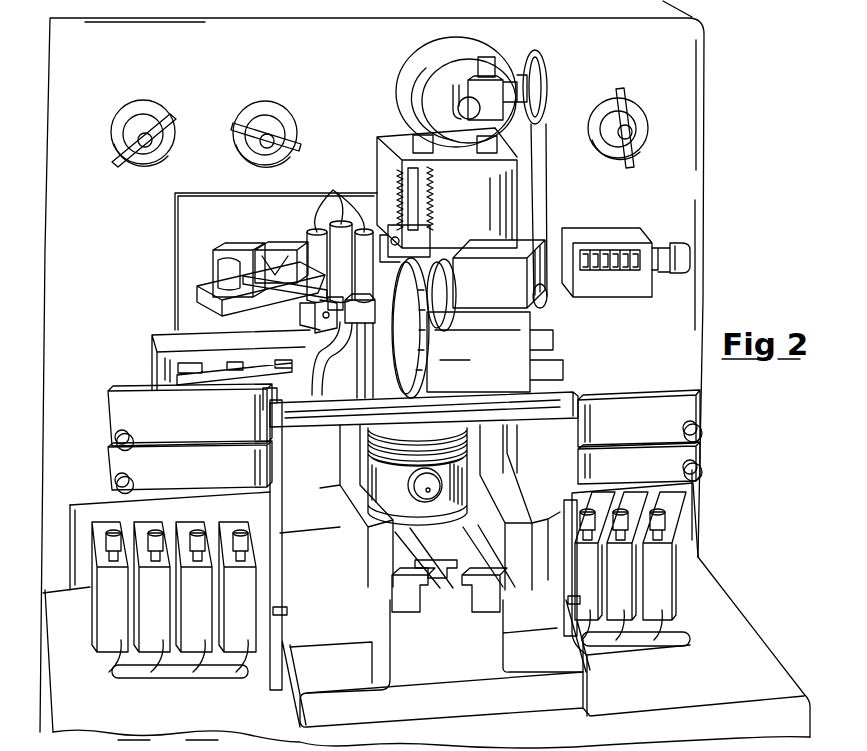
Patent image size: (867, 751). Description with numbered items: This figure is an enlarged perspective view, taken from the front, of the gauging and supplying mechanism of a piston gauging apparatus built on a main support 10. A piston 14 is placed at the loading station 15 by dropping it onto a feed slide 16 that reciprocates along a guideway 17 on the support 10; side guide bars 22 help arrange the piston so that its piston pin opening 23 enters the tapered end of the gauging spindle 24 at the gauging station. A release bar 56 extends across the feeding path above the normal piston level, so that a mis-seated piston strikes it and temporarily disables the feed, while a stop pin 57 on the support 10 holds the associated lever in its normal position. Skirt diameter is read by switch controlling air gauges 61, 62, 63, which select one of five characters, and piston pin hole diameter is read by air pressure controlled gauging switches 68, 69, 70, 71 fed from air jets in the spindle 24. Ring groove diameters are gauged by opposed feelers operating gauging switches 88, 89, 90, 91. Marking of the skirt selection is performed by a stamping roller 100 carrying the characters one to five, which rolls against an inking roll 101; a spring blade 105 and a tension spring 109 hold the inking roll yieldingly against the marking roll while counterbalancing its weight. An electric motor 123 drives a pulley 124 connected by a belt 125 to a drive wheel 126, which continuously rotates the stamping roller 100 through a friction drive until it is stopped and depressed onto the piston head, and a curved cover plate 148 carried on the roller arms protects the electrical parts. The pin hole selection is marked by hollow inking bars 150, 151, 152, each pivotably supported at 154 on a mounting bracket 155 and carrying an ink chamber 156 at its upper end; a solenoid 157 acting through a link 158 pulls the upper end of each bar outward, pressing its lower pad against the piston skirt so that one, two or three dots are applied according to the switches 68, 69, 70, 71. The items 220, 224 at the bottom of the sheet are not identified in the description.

The main support 10 is at (742, 620).
The piston 14 is at (458, 487).
The loading station 15 is at (463, 605).
The feed slide 16 is at (438, 579).
The guideway 17 is at (410, 613).
The side guide bars 22 is at (362, 498).
The piston pin opening 23 is at (410, 487).
The gauging spindle 24 is at (428, 494).
The release bar 56 is at (578, 398).
The stop pin 57 is at (284, 610).
The switch controlling air gauge 61 is at (595, 566).
The switch controlling air gauge 62 is at (627, 566).
The switch controlling air gauge 63 is at (664, 566).
The air pressure controlled gauging switch 68 is at (110, 597).
The air pressure controlled gauging switch 69 is at (152, 597).
The air pressure controlled gauging switch 70 is at (194, 597).
The air pressure controlled gauging switch 71 is at (237, 597).
The gauging switch 88 is at (122, 410).
The gauging switch 89 is at (118, 470).
The gauging switch 90 is at (660, 398).
The gauging switch 91 is at (703, 450).
The stamping roller 100 is at (425, 352).
The inking roll 101 is at (428, 248).
The spring blade 105 is at (428, 198).
The tension spring 109 is at (430, 186).
The electric motor 123 is at (425, 76).
The pulley 124 is at (527, 62).
The belt 125 is at (548, 182).
The drive wheel 126 is at (547, 305).
The curved cover plate 148 is at (520, 342).
The inking bar 150 is at (345, 375).
The inking bar 151 is at (361, 342).
The inking bar 152 is at (370, 372).
The pivot 154 is at (315, 325).
The mounting bracket 155 is at (230, 305).
The ink chamber 156 is at (333, 190).
The solenoid 157 is at (215, 280).
The link 158 is at (250, 256).
The bottom element 220 is at (133, 745).
The bottom element 224 is at (202, 745).